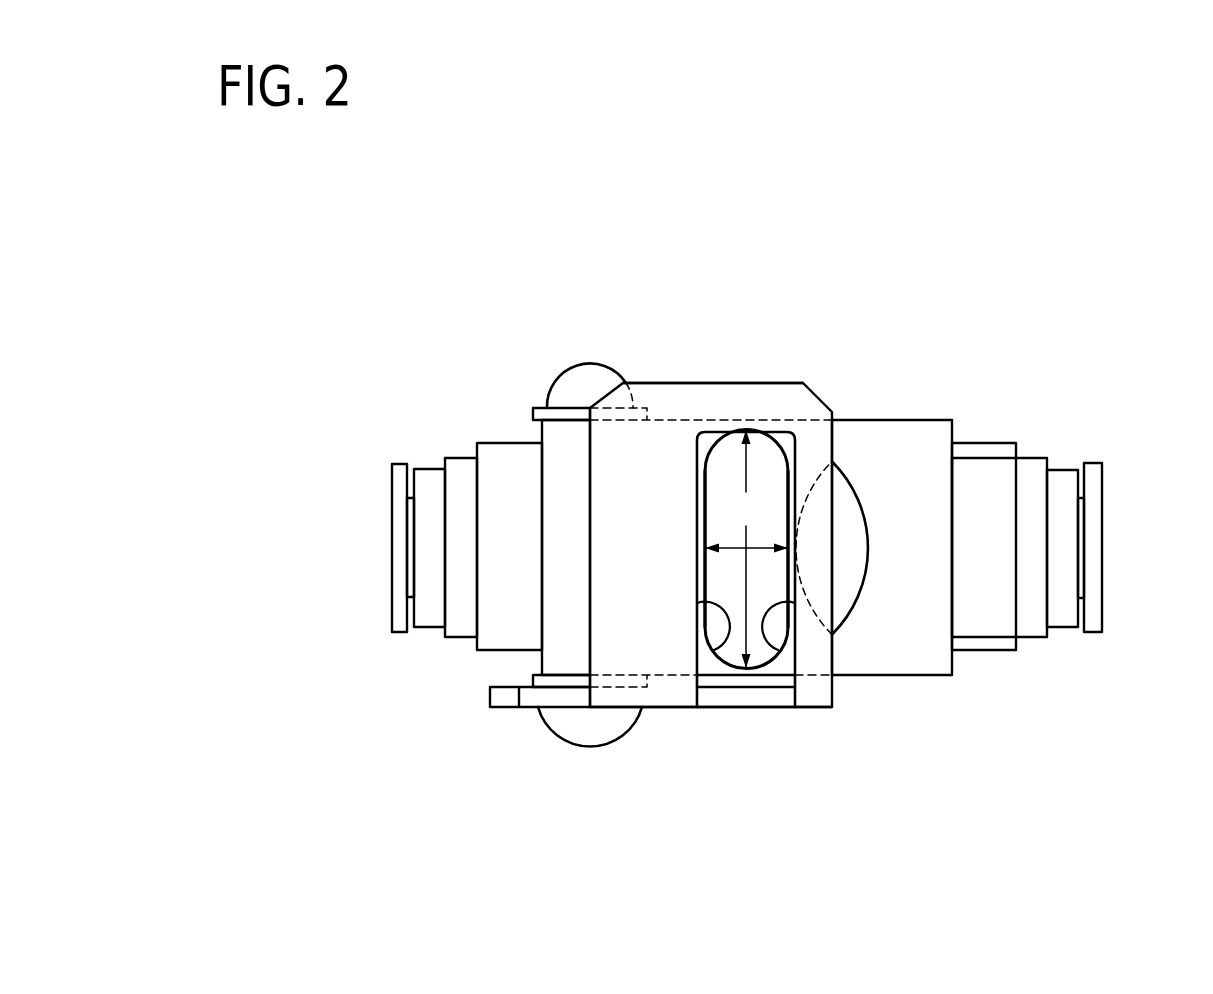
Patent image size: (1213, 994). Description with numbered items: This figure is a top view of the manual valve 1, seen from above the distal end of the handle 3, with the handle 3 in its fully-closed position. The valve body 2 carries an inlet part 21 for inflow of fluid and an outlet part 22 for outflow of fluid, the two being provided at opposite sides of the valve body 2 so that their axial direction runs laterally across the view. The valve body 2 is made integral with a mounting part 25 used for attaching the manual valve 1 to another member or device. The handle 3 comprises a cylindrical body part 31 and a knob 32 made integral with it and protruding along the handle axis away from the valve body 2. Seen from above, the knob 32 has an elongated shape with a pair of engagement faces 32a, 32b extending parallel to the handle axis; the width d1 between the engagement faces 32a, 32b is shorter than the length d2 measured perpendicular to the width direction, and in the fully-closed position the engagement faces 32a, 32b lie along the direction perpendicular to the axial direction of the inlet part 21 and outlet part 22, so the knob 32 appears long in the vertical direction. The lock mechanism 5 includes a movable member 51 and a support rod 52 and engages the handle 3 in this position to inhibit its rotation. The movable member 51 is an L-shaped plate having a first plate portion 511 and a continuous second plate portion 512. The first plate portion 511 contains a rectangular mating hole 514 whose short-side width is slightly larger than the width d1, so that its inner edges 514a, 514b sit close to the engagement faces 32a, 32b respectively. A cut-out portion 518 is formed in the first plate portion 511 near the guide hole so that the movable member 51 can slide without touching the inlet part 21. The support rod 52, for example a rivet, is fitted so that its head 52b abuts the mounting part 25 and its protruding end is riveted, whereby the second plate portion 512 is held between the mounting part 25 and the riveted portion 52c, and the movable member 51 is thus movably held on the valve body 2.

The manual valve 1 is at (758, 183).
The valve body 2 is at (913, 678).
The inlet part 21 is at (390, 517).
The outlet part 22 is at (1102, 515).
The mounting part 25 is at (940, 440).
The handle 3 is at (925, 312).
The body part 31 is at (853, 513).
The knob 32 is at (789, 479).
The engagement face 32a is at (705, 503).
The engagement face 32b is at (790, 523).
The lock mechanism 5 is at (677, 262).
The movable member 51 is at (737, 528).
The first plate portion 511 is at (752, 390).
The second plate portion 512 is at (753, 695).
The mating hole 514 is at (737, 537).
The inner edge 514a is at (698, 688).
The inner edge 514b is at (795, 688).
The cut-out portion 518 is at (590, 658).
The support rod 52 is at (621, 528).
The head 52b is at (558, 382).
The riveted portion 52c is at (590, 733).
The width d1 is at (737, 550).
The length d2 is at (741, 549).